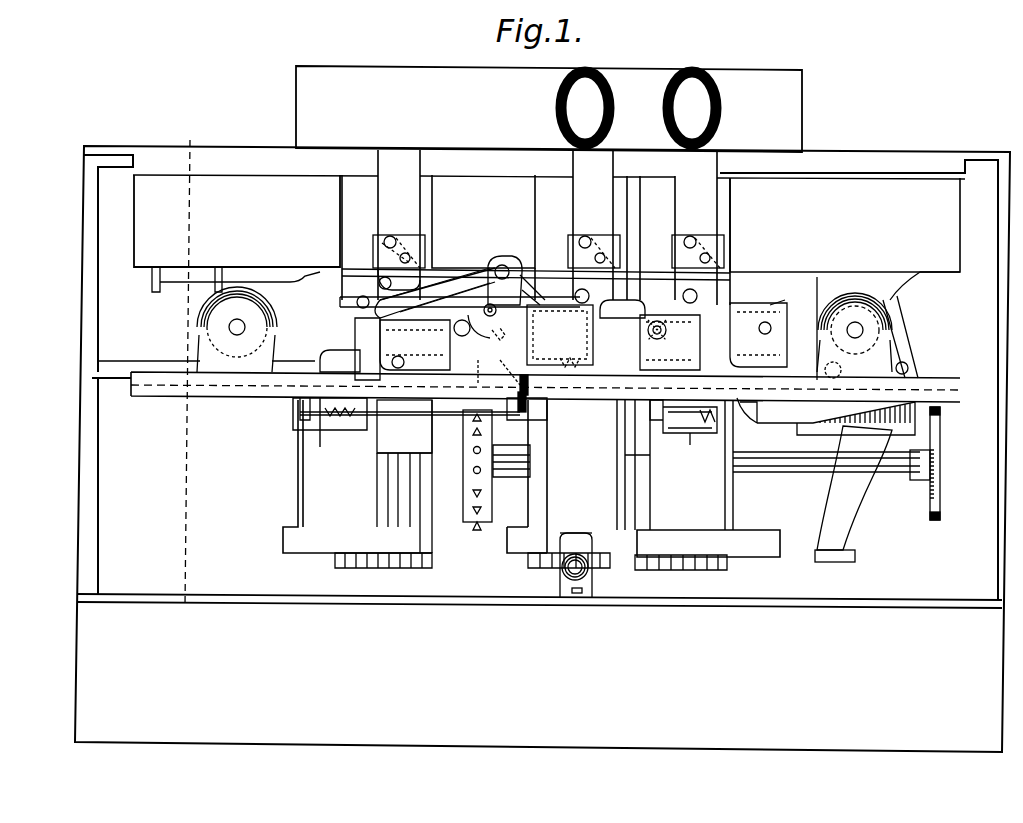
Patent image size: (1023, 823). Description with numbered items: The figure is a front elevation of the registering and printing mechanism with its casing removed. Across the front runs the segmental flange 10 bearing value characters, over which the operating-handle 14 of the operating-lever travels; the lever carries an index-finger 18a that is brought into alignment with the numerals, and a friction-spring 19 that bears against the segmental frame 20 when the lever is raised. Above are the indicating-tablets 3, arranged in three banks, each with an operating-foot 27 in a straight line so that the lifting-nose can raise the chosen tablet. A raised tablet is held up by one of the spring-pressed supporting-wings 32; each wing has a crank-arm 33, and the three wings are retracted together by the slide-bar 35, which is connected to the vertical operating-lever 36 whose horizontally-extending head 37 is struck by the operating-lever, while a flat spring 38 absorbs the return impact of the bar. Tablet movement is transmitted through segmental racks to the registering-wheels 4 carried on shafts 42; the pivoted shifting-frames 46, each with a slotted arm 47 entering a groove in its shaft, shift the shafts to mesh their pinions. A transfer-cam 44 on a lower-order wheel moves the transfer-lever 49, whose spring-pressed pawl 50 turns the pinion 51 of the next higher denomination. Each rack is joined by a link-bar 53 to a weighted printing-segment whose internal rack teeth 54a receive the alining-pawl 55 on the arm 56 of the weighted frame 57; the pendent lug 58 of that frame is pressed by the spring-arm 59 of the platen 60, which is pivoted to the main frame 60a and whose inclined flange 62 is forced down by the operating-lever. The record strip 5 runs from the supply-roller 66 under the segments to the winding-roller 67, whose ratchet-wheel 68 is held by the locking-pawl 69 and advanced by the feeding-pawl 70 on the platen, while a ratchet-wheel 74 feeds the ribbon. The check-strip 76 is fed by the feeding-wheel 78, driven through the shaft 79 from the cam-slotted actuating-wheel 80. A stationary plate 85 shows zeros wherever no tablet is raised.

The indicating-tablets 3 is at (726, 498).
The registering-wheels 4 is at (481, 376).
The record strip 5 is at (270, 316).
The segmental flange 10 is at (398, 606).
The operating-handle 14 is at (562, 570).
The index-finger 18a is at (578, 594).
The friction-spring 19 is at (583, 533).
The segmental frame 20 is at (172, 398).
The operating-foot 27 is at (432, 560).
The spring-pressed supporting-wings 32 is at (418, 242).
The crank-arm 33 is at (380, 268).
The slide-bar 35 is at (320, 276).
The vertical operating-lever 36 is at (855, 508).
The horizontally-extending head 37 is at (840, 562).
The flat spring 38 is at (649, 294).
The shafts 42 is at (770, 312).
The transfer-cam 44 is at (662, 321).
The shifting-frames 46 is at (504, 462).
The slotted arm 47 is at (455, 330).
The transfer-lever 49 is at (640, 308).
The spring-pressed pawl 50 is at (494, 316).
The pinion 51 is at (480, 310).
The link-bar 53 is at (448, 287).
The teeth 54a is at (560, 336).
The alining-pawl 55 is at (500, 372).
The arm 56 is at (410, 360).
The weighted frame 57 is at (325, 360).
The pendent lug 58 is at (297, 392).
The spring-arm 59 is at (398, 414).
The platen 60 is at (757, 412).
The main frame 60a is at (737, 425).
The flange 62 is at (848, 435).
The supply-roller 66 is at (229, 327).
The winding-roller 67 is at (840, 322).
The ratchet-wheel 68 is at (830, 327).
The locking-pawl 69 is at (822, 366).
The feeding-pawl 70 is at (905, 348).
The ratchet-wheel 74 is at (518, 408).
The check-strip 76 is at (470, 392).
The feeding-wheel 78 is at (463, 456).
The shaft 79 is at (770, 472).
The actuating-wheel 80 is at (940, 497).
The stationary plate 85 is at (549, 109).